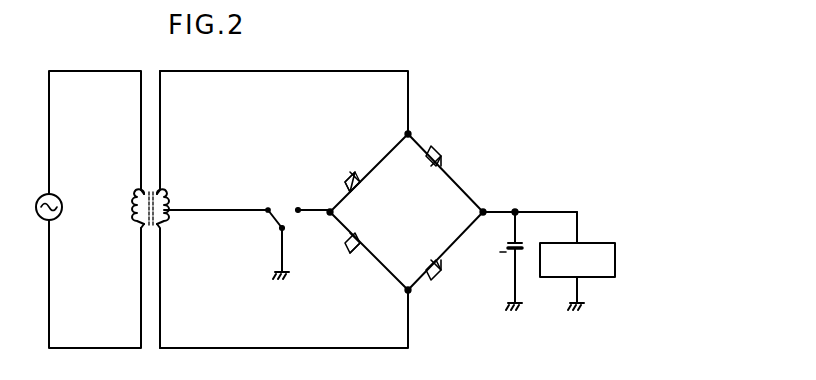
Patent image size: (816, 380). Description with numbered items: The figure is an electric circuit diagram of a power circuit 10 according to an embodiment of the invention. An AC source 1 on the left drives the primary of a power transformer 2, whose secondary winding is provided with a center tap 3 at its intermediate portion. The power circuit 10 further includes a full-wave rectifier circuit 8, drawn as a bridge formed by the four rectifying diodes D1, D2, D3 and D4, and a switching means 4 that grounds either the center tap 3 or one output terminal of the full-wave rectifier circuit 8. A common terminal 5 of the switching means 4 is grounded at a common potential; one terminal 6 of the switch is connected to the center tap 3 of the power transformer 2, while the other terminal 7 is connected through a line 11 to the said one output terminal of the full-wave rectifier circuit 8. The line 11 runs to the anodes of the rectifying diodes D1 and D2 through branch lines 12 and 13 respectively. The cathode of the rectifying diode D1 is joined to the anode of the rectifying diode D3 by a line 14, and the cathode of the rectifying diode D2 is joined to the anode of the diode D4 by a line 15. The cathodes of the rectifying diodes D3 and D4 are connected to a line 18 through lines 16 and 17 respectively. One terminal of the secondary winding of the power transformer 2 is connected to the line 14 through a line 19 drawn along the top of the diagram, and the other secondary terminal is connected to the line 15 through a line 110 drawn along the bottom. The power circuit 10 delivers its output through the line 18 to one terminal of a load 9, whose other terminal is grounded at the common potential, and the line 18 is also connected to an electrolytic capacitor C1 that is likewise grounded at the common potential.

The AC power source 1 is at (57, 196).
The power transformer 2 is at (136, 221).
The center tap 3 is at (168, 213).
The switching means 4 is at (279, 196).
The common terminal 5 is at (288, 253).
The one terminal 6 is at (271, 224).
The other terminal 7 is at (301, 208).
The full-wave rectifier circuit 8 is at (487, 165).
The load 9 is at (590, 240).
The power circuit 10 is at (496, 63).
The line 11 is at (320, 214).
The branch line 12 is at (338, 198).
The branch line 13 is at (347, 221).
The line 14 is at (411, 142).
The line 15 is at (409, 284).
The line 16 is at (448, 182).
The line 17 is at (450, 242).
The line 18 is at (498, 209).
The line 19 is at (266, 70).
The line 110 is at (284, 335).
The rectifying diode D1 is at (352, 172).
The rectifying diode D2 is at (371, 240).
The rectifying diode D3 is at (432, 153).
The rectifying diode D4 is at (440, 271).
The electrolytic capacitor C1 is at (517, 250).